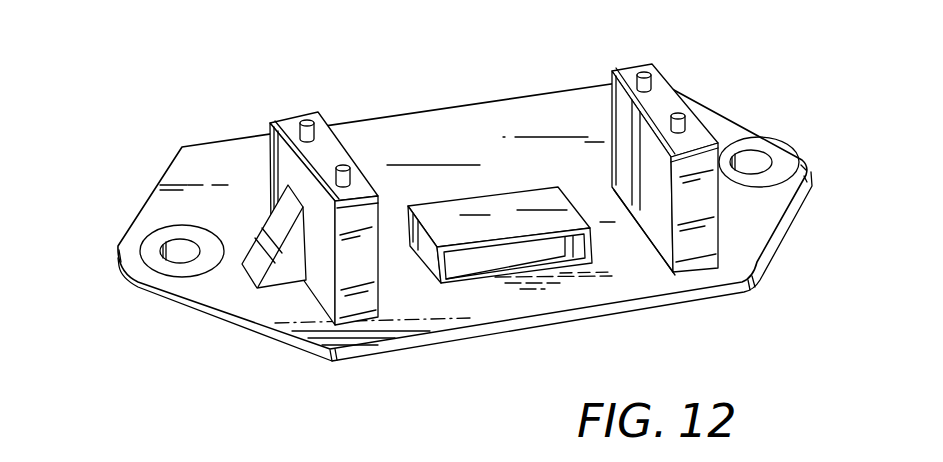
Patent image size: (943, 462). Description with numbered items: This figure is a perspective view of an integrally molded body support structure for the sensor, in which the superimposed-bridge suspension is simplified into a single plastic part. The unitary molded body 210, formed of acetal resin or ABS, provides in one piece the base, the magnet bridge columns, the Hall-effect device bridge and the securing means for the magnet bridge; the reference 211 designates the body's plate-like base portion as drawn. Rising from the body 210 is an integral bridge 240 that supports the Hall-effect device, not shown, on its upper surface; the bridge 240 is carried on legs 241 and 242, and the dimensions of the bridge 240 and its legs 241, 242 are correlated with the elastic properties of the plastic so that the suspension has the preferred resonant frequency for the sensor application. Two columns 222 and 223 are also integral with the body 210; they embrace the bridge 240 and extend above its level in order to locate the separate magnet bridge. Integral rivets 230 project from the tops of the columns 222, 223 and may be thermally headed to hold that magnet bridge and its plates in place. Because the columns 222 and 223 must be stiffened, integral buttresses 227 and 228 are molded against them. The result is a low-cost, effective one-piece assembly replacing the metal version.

The unitary molded body 210 is at (452, 338).
The plate top surface 211 is at (187, 168).
The column 222 is at (267, 167).
The column 223 is at (618, 117).
The buttress 227 is at (283, 273).
The buttress 228 is at (722, 211).
The integral rivets 230 is at (343, 164).
The bridge 240 is at (493, 220).
The leg 241 is at (413, 240).
The leg 242 is at (588, 225).